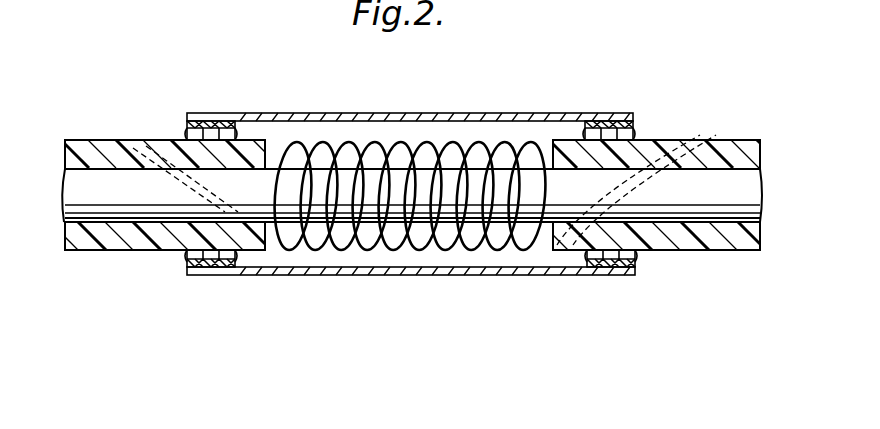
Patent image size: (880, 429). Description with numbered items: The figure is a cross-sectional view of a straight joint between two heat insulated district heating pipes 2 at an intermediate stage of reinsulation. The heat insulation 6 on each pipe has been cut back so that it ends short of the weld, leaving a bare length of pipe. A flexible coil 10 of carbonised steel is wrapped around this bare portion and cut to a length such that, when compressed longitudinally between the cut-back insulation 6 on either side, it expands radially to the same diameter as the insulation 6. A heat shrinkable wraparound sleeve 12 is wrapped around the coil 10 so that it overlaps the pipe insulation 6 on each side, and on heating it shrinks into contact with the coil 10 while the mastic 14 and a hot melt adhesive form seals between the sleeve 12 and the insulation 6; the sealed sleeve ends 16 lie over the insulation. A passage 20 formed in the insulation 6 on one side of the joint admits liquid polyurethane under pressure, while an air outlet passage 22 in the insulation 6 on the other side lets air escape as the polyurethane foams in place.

The heat insulated district heating pipe 2 is at (127, 200).
The heat insulation 6 is at (79, 150).
The coil 10 is at (330, 247).
The heat shrinkable wraparound sleeve 12 is at (443, 113).
The mastic 14 is at (208, 122).
The clamp edge 16 is at (187, 129).
The passage 20 is at (556, 232).
The air outlet passage 22 is at (150, 142).